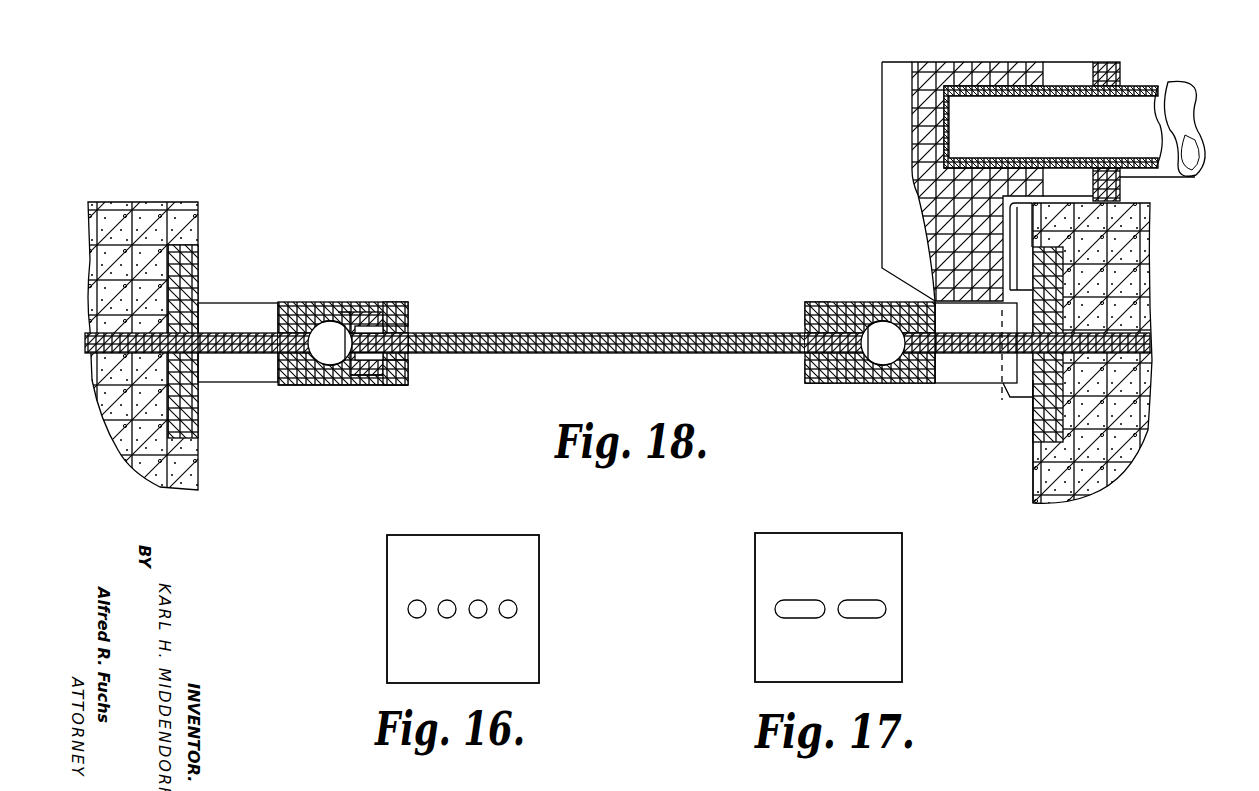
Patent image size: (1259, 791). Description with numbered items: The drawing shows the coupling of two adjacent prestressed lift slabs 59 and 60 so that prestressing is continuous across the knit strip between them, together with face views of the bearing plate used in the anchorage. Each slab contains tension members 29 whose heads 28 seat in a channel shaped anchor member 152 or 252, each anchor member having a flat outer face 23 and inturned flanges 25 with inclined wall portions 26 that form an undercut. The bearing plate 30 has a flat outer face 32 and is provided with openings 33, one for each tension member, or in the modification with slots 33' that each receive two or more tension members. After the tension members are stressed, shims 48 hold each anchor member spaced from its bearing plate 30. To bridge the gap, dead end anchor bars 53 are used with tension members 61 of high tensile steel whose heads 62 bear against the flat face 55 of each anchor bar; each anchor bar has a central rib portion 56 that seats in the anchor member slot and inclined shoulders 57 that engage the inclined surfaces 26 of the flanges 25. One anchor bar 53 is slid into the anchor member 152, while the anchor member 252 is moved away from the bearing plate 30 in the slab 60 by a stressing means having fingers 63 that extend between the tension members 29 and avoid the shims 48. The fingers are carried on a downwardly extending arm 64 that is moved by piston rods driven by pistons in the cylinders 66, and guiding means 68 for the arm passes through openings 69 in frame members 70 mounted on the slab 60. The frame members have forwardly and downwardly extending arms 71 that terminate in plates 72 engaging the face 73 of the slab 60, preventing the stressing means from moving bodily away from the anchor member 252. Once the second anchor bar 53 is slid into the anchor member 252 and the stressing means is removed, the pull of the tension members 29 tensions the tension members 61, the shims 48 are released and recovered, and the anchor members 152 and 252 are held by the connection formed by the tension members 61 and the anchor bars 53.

In FIG. 18, the flat outer face 23 is at (935, 384).
In FIG. 18, the inturned flanges 25 is at (410, 328).
In FIG. 18, the inclined wall portions 26 is at (388, 312).
In FIG. 18, the head portion 28 is at (318, 376).
In FIG. 18, the tension member 29 is at (243, 333).
In FIG. 18, the bearing plate 30 is at (188, 272).
In FIG. 16, the bearing plate 30 is at (455, 535).
In FIG. 17, the bearing plate 30 is at (823, 533).
In FIG. 18, the outer face 32 is at (1033, 412).
In FIG. 16, the outer face 32 is at (512, 575).
In FIG. 17, the outer face 32 is at (880, 576).
In FIG. 16, the openings 33 is at (472, 632).
In FIG. 17, the slots 33' is at (838, 628).
In FIG. 18, the shims 48 is at (215, 376).
In FIG. 18, the dead end anchor bar 53 is at (366, 312).
In FIG. 18, the flat face 55 is at (340, 312).
In FIG. 18, the central rib portion 56 is at (828, 366).
In FIG. 18, the inclined shoulders 57 is at (376, 376).
In FIG. 18, the prestressed slab 59 is at (150, 485).
In FIG. 18, the prestressed slab 60 is at (1062, 500).
In FIG. 18, the tension members 61 is at (604, 333).
In FIG. 18, the heads 62 is at (330, 366).
In FIG. 18, the fingers 63 is at (975, 400).
In FIG. 18, the downwardly extending arm 64 is at (952, 262).
In FIG. 18, the cylinders 66 is at (1190, 86).
In FIG. 18, the guiding means 68 is at (1136, 86).
In FIG. 18, the openings 69 is at (1110, 78).
In FIG. 18, the frame members 70 is at (1096, 70).
In FIG. 18, the arms 71 is at (893, 188).
In FIG. 18, the plates 72 is at (1010, 398).
In FIG. 18, the face 73 is at (1034, 470).
In FIG. 18, the anchor member 152 is at (310, 302).
In FIG. 18, the anchor member 252 is at (870, 302).